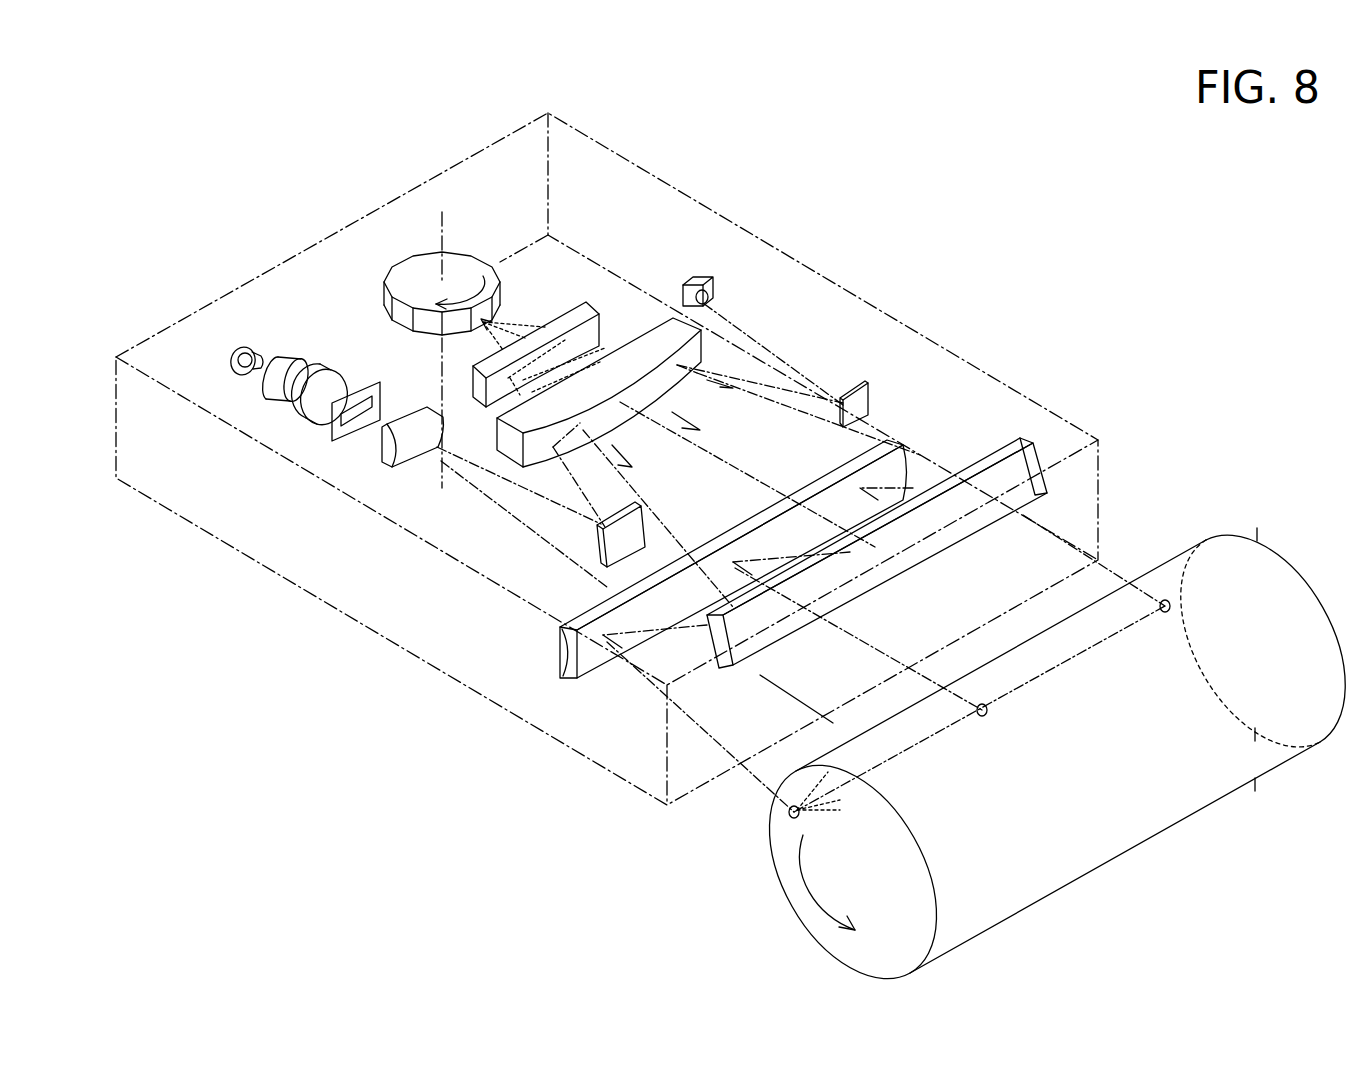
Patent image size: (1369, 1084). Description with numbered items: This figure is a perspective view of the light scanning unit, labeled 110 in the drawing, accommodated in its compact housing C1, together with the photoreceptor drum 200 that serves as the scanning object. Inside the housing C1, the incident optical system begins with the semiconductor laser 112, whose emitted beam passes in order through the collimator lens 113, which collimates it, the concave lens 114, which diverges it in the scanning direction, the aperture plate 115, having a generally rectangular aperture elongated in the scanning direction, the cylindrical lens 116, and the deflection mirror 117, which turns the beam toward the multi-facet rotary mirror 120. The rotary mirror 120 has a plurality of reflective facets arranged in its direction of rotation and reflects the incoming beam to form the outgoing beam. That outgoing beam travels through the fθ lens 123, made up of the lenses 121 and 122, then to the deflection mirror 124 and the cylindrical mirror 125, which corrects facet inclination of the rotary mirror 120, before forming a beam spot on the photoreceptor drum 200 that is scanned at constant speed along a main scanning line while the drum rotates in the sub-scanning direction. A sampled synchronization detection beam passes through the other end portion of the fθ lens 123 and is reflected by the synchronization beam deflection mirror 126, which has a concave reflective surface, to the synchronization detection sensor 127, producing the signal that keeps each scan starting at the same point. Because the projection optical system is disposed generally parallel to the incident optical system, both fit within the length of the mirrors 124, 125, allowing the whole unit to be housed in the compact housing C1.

The laser scanning unit 110 is at (337, 547).
The housing C1 is at (285, 263).
The semiconductor laser 112 is at (228, 356).
The collimator lens 113 is at (278, 394).
The concave lens 114 is at (325, 399).
The aperture plate 115 is at (341, 443).
The cylindrical lens 116 is at (417, 463).
The deflection mirror 117 is at (597, 545).
The multi-facet rotary mirror 120 is at (455, 252).
The lens 121 is at (590, 303).
The lens 122 is at (652, 318).
The fθ lens 123 is at (648, 222).
The deflection mirror 124 is at (1043, 445).
The cylindrical mirror 125 is at (560, 672).
The synchronization beam deflection mirror 126 is at (872, 399).
The synchronization detection sensor 127 is at (712, 283).
The photoreceptor drum 200 is at (783, 874).